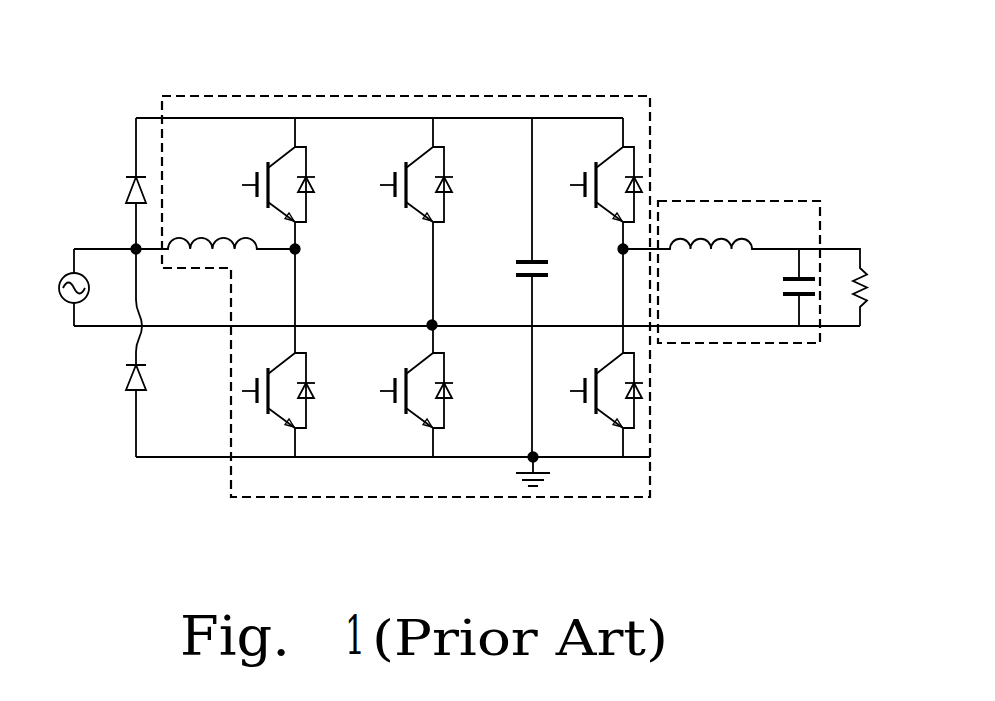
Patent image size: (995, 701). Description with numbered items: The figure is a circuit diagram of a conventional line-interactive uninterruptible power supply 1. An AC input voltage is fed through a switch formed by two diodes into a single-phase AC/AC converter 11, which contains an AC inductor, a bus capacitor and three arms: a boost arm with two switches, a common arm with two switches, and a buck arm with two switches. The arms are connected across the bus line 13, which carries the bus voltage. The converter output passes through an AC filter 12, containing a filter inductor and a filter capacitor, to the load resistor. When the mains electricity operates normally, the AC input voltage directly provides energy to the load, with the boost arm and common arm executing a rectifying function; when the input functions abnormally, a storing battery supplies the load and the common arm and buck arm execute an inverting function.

The line-interactive uninterruptible power supply 1 is at (795, 535).
The single-phase AC/AC converter 11 is at (603, 498).
The AC filter 12 is at (735, 343).
The bus line 13 is at (463, 118).